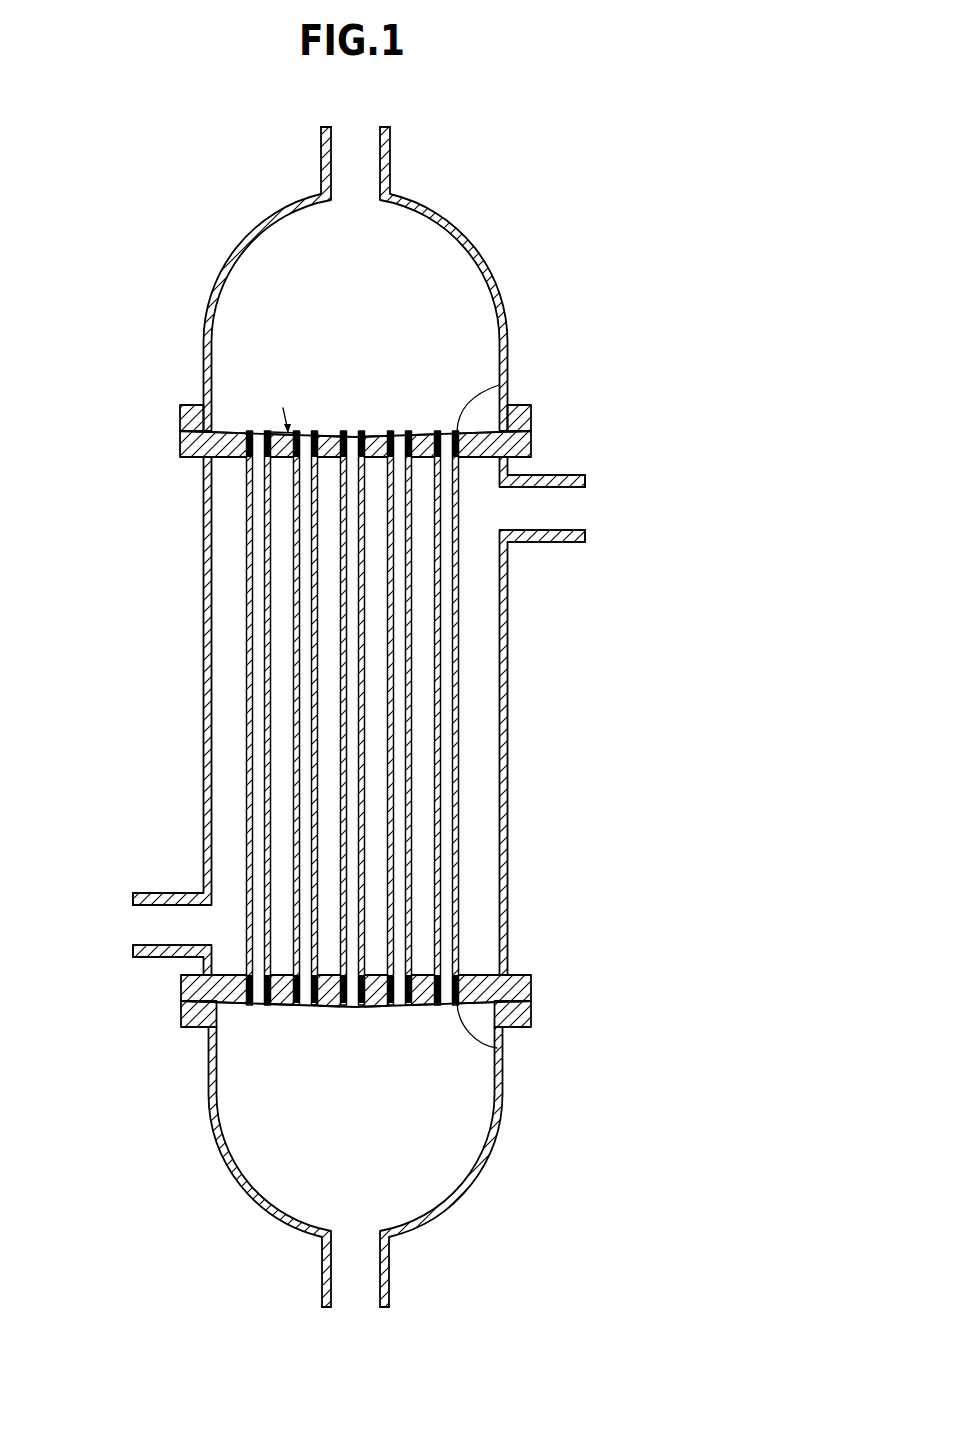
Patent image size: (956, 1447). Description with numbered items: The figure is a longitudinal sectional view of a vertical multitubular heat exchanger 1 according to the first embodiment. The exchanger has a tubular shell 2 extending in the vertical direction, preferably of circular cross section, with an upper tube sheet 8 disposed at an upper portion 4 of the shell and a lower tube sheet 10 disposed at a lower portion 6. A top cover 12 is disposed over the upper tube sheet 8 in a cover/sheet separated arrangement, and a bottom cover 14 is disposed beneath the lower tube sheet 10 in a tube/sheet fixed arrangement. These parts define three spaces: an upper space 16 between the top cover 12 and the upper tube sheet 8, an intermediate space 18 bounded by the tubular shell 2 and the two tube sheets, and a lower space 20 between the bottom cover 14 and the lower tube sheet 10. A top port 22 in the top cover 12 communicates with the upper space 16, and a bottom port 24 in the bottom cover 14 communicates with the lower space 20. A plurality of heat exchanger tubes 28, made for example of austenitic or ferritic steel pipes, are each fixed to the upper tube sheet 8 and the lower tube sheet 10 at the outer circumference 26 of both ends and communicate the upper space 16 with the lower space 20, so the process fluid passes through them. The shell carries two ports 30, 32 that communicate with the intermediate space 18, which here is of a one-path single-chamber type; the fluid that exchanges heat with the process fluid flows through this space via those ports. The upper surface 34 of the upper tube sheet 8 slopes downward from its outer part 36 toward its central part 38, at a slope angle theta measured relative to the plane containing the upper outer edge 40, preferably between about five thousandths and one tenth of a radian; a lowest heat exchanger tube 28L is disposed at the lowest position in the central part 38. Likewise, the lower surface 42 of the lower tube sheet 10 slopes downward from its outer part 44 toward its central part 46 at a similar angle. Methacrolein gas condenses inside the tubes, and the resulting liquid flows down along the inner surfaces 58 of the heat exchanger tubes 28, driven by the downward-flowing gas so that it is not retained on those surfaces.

The vertical multitubular heat exchanger 1 is at (589, 228).
The tubular shell 2 is at (379, 710).
The upper portion 4 is at (508, 472).
The lower portion 6 is at (508, 951).
The upper tube sheet 8 is at (527, 446).
The lower tube sheet 10 is at (533, 986).
The top cover 12 is at (462, 230).
The bottom cover 14 is at (482, 1178).
The upper space 16 is at (268, 247).
The intermediate space 18 is at (232, 668).
The lower space 20 is at (278, 1192).
The top port 22 is at (386, 128).
The bottom port 24 is at (382, 1305).
The outer circumference 26 is at (490, 388).
The heat exchanger tubes 28 is at (424, 719).
The lowest heat exchanger tube 28L is at (365, 767).
The port 30 is at (135, 896).
The port 32 is at (585, 536).
The upper surface 34 is at (331, 436).
The outer part 36 is at (509, 403).
The central part 38 is at (366, 440).
The upper outer edge 40 is at (212, 428).
The lower surface 42 is at (283, 1006).
The outer part 44 is at (214, 1048).
The central part 46 is at (342, 1010).
The inner surfaces 58 is at (452, 649).